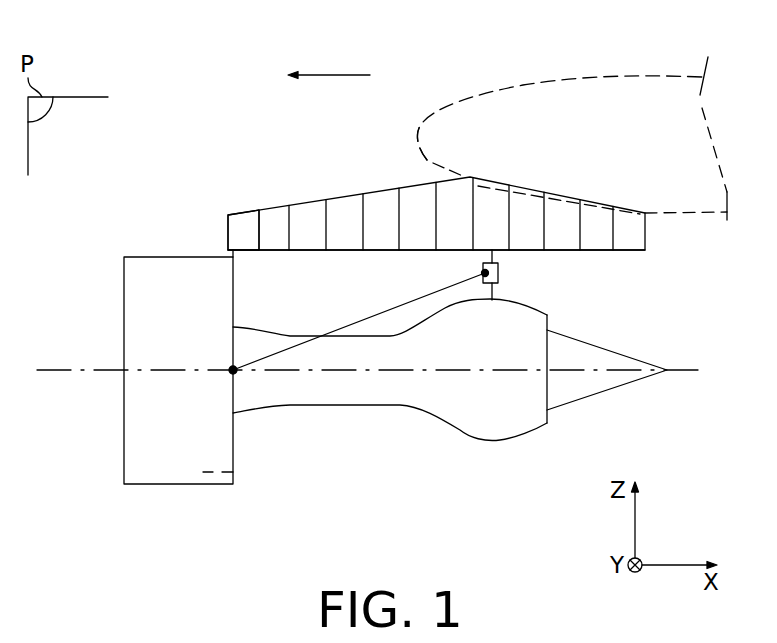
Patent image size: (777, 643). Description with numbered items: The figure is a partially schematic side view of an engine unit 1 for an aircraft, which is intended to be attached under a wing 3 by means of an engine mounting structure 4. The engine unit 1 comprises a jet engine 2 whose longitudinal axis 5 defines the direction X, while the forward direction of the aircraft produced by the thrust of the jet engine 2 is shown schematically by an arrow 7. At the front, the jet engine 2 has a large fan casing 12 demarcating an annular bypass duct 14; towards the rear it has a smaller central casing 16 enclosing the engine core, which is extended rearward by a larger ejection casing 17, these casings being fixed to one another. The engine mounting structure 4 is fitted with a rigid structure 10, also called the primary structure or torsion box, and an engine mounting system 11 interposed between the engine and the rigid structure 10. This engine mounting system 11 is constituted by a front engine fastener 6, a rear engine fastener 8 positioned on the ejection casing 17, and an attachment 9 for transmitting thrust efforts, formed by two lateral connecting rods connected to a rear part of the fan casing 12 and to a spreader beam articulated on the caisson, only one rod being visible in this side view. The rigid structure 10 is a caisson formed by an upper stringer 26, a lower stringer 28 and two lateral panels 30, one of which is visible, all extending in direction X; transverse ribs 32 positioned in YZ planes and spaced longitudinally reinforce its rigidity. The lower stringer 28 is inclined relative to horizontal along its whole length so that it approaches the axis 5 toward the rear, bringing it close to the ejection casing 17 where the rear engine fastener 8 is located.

The engine unit 1 is at (186, 183).
The jet engine 2 is at (176, 494).
The wing 3 is at (480, 97).
The engine mounting structure 4 is at (298, 186).
The longitudinal axis 5 is at (53, 372).
The front engine fastener 6 is at (241, 256).
The arrow 7 is at (322, 75).
The rear engine fastener 8 is at (477, 285).
The thrust transmission attachment 9 is at (330, 325).
The rigid structure 10 is at (365, 186).
The engine mounting system 11 is at (357, 286).
The fan casing 12 is at (133, 485).
The annular bypass duct 14 is at (235, 473).
The central casing 16 is at (328, 407).
The ejection casing 17 is at (490, 441).
The upper stringer 26 is at (413, 185).
The lower stringer 28 is at (578, 250).
The lateral panel 30 is at (272, 218).
The transverse ribs 32 is at (473, 217).